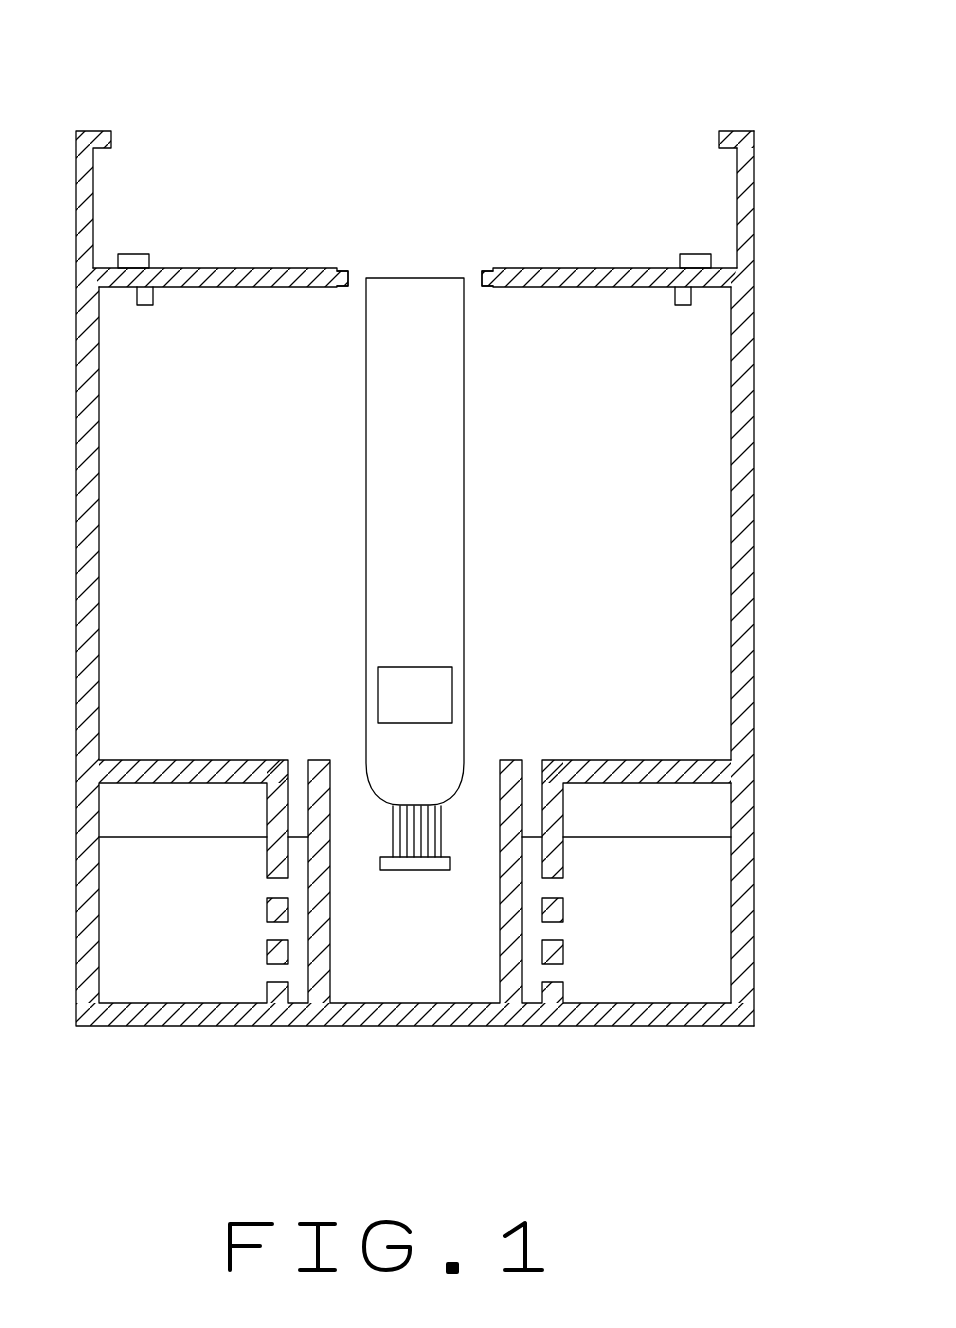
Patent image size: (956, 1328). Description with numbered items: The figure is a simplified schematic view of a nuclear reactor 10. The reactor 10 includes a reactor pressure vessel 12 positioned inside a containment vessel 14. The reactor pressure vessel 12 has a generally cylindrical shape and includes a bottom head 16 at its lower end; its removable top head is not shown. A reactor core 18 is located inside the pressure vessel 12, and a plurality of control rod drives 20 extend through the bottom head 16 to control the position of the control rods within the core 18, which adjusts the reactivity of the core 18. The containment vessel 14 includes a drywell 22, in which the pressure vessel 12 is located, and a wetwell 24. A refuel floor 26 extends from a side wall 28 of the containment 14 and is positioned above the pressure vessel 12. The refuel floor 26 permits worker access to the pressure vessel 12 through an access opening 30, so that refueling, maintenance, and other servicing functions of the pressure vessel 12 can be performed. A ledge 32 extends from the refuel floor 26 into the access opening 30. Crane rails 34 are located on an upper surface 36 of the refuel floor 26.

The nuclear reactor 10 is at (715, 60).
The reactor pressure vessel 12 is at (460, 554).
The containment vessel 14 is at (471, 578).
The bottom head 16 is at (462, 793).
The reactor core 18 is at (453, 685).
The control rod drives 20 is at (388, 833).
The drywell 22 is at (243, 508).
The wetwell 24 is at (683, 818).
The refuel floor 26 is at (263, 267).
The side wall 28 is at (750, 290).
The access opening 30 is at (362, 260).
The ledge 32 is at (345, 289).
The crane rails 34 is at (130, 253).
The upper surface 36 is at (585, 267).